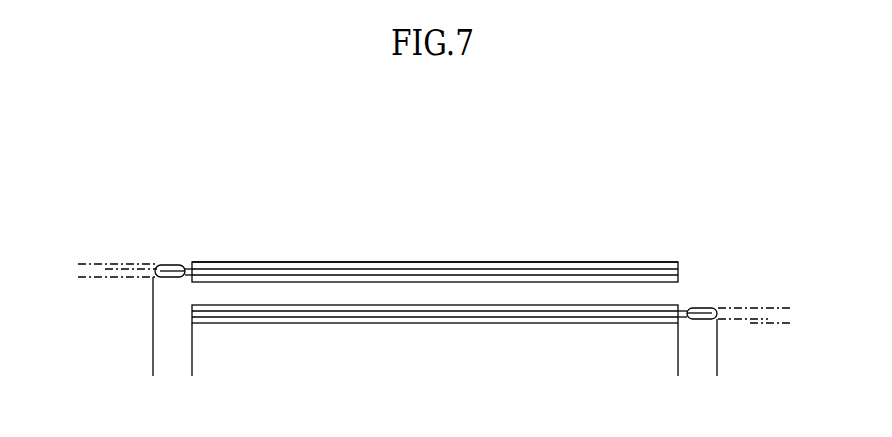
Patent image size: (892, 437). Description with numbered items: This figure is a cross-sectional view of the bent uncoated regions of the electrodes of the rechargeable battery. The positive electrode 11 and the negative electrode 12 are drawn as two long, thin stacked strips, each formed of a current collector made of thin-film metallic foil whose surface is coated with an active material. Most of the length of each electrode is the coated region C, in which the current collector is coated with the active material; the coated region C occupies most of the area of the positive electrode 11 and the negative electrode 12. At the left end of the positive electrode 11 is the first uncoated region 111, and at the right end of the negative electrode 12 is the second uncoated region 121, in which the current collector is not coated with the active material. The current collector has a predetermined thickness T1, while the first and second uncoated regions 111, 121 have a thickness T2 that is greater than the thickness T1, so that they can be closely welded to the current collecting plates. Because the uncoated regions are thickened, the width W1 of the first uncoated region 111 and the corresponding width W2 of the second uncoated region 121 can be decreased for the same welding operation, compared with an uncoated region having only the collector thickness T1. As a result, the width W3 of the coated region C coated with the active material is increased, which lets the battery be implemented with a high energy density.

The positive electrode 11 is at (695, 254).
The first uncoated region 111 is at (170, 265).
The negative electrode 12 is at (177, 323).
The second uncoated region 121 is at (705, 308).
The coated region C is at (419, 246).
The thickness of the current collector T1 is at (110, 288).
The thickness of the uncoated regions T2 is at (83, 288).
The width of the first uncoated region W1 is at (192, 369).
The width of the second uncoated region W2 is at (717, 369).
The width of the coated region W3 is at (192, 369).